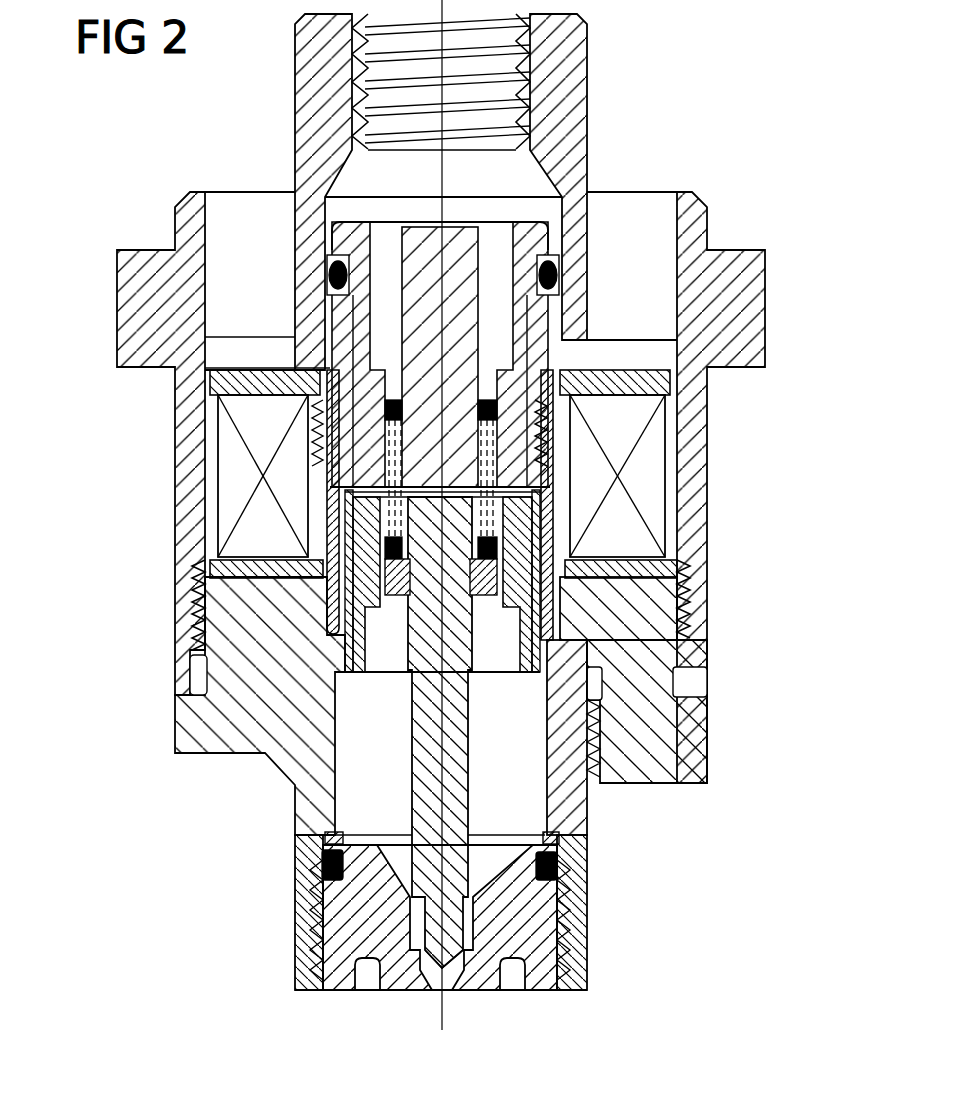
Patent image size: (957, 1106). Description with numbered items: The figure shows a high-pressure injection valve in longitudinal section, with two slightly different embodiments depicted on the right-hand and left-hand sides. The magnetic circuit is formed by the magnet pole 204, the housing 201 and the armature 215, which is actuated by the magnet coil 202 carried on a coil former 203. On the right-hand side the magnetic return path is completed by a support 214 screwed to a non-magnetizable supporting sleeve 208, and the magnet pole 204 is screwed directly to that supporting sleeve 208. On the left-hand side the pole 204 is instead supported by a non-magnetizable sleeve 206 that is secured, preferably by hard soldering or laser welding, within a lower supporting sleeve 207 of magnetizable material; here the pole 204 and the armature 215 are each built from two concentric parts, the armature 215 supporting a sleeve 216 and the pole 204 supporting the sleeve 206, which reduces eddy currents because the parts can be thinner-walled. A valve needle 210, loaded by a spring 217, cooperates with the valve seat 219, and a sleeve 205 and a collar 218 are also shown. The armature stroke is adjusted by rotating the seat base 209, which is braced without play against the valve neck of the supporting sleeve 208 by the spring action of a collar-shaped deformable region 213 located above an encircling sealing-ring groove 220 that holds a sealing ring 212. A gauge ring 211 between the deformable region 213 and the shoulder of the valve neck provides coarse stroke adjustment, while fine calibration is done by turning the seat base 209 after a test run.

The housing 201 is at (732, 328).
The magnet coil 202 is at (655, 438).
The coil former 203 is at (548, 262).
The magnet pole 204 is at (537, 222).
The sleeve 205 is at (330, 348).
The non-magnetizable sleeve 206 is at (200, 608).
The lower supporting sleeve 207 is at (200, 733).
The supporting sleeve 208 is at (570, 800).
The seat base 209 is at (540, 965).
The valve needle 210 is at (590, 640).
The gauge ring 211 is at (322, 840).
The sealing ring 212 is at (562, 868).
The deformable region 213 is at (558, 845).
The support 214 is at (680, 730).
The armature 215 is at (495, 555).
The sleeve 216 is at (338, 610).
The spring 217 is at (563, 498).
The collar 218 is at (547, 545).
The valve seat 219 is at (425, 975).
The sealing-ring groove 220 is at (572, 905).